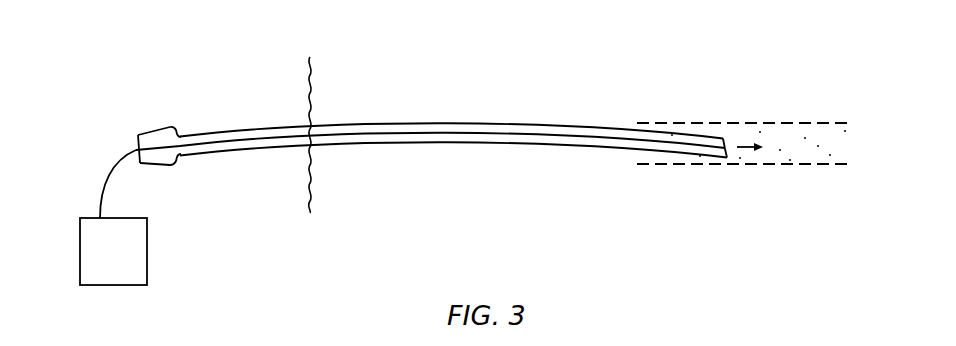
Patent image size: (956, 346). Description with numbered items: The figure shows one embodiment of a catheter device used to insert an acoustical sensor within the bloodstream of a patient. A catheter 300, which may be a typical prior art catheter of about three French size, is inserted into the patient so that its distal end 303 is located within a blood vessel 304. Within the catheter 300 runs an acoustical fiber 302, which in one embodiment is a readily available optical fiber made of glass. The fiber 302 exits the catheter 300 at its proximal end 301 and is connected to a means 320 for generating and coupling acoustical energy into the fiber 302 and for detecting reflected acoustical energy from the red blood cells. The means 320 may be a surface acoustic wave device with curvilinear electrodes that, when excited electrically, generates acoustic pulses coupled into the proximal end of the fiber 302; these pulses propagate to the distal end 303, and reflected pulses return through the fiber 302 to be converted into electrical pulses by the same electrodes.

The catheter 300 is at (443, 143).
The proximal end 301 is at (150, 114).
The acoustical fiber 302 is at (122, 151).
The distal end 303 is at (733, 148).
The blood vessel 304 is at (743, 164).
The means for generating and coupling acoustical energy 320 is at (147, 263).